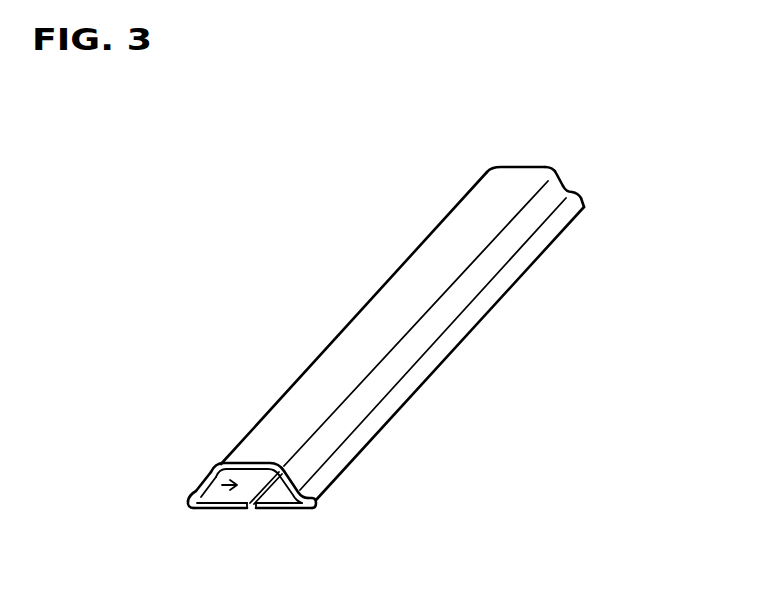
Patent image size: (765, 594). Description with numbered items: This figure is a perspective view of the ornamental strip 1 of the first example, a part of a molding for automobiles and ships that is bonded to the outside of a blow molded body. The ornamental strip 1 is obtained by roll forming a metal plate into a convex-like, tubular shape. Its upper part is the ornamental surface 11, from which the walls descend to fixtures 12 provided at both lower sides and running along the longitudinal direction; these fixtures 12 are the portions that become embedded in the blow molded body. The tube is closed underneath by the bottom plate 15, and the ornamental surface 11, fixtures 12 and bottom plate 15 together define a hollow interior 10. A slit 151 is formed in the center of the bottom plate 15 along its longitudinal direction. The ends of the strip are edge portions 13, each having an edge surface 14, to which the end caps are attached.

The ornamental strip 1 is at (384, 355).
The hollow interior 10 is at (197, 490).
The ornamental surface 11 is at (420, 270).
The fixture 12 is at (518, 263).
The edge portion 13 is at (283, 450).
The edge surface 14 is at (233, 454).
The bottom plate 15 is at (226, 510).
The slit 151 is at (249, 510).